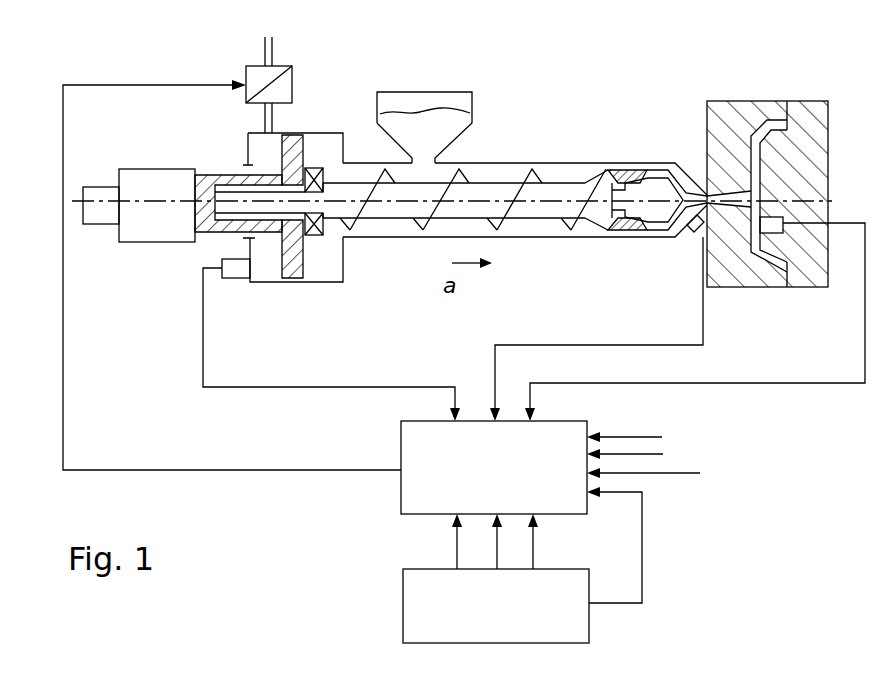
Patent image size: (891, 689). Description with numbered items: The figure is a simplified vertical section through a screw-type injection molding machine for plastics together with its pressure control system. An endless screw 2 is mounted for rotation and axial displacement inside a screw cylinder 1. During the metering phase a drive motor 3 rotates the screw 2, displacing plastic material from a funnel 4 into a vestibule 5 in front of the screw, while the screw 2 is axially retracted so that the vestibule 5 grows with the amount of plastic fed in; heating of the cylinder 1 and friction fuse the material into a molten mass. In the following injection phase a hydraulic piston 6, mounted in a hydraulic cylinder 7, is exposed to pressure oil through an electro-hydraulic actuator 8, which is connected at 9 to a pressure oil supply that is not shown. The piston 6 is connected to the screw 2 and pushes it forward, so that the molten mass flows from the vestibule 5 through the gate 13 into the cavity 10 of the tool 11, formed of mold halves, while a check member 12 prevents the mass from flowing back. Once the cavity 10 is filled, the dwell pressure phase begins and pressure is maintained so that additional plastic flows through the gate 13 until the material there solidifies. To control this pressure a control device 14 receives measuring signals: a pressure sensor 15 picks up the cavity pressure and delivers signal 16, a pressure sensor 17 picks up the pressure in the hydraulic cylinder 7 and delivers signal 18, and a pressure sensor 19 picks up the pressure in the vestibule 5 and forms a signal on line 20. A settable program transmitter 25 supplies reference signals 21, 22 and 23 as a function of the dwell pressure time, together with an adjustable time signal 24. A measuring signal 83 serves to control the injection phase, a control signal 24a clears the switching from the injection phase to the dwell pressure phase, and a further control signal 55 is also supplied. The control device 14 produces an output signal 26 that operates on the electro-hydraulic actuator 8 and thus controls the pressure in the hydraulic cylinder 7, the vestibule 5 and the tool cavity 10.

The screw cylinder 1 is at (512, 163).
The endless screw 2 is at (553, 190).
The drive motor 3 is at (137, 235).
The funnel 4 is at (462, 124).
The vestibule 5 is at (672, 168).
The hydraulic piston 6 is at (298, 272).
The hydraulic cylinder 7 is at (272, 283).
The electro-hydraulic actuator 8 is at (293, 89).
The pressure oil supply connection 9 is at (268, 52).
The cavity 10 is at (762, 138).
The tool 11 is at (807, 278).
The check member 12 is at (625, 233).
The gate 13 is at (727, 188).
The control device 14 is at (508, 482).
The pressure sensor 15 is at (790, 216).
The signal line 16 is at (533, 398).
The pressure sensor 17 is at (235, 273).
The signal line 18 is at (453, 398).
The pressure sensor 19 is at (690, 233).
The signal line 20 is at (493, 358).
The reference signal 21 is at (533, 547).
The reference signal 22 is at (455, 543).
The reference signal 23 is at (484, 541).
The adjustable time signal 24 is at (647, 547).
The control signal 24a is at (680, 473).
The program transmitter 25 is at (511, 622).
The output signal 26 is at (350, 470).
The control signal 55 is at (645, 454).
The measuring signal 83 is at (640, 437).